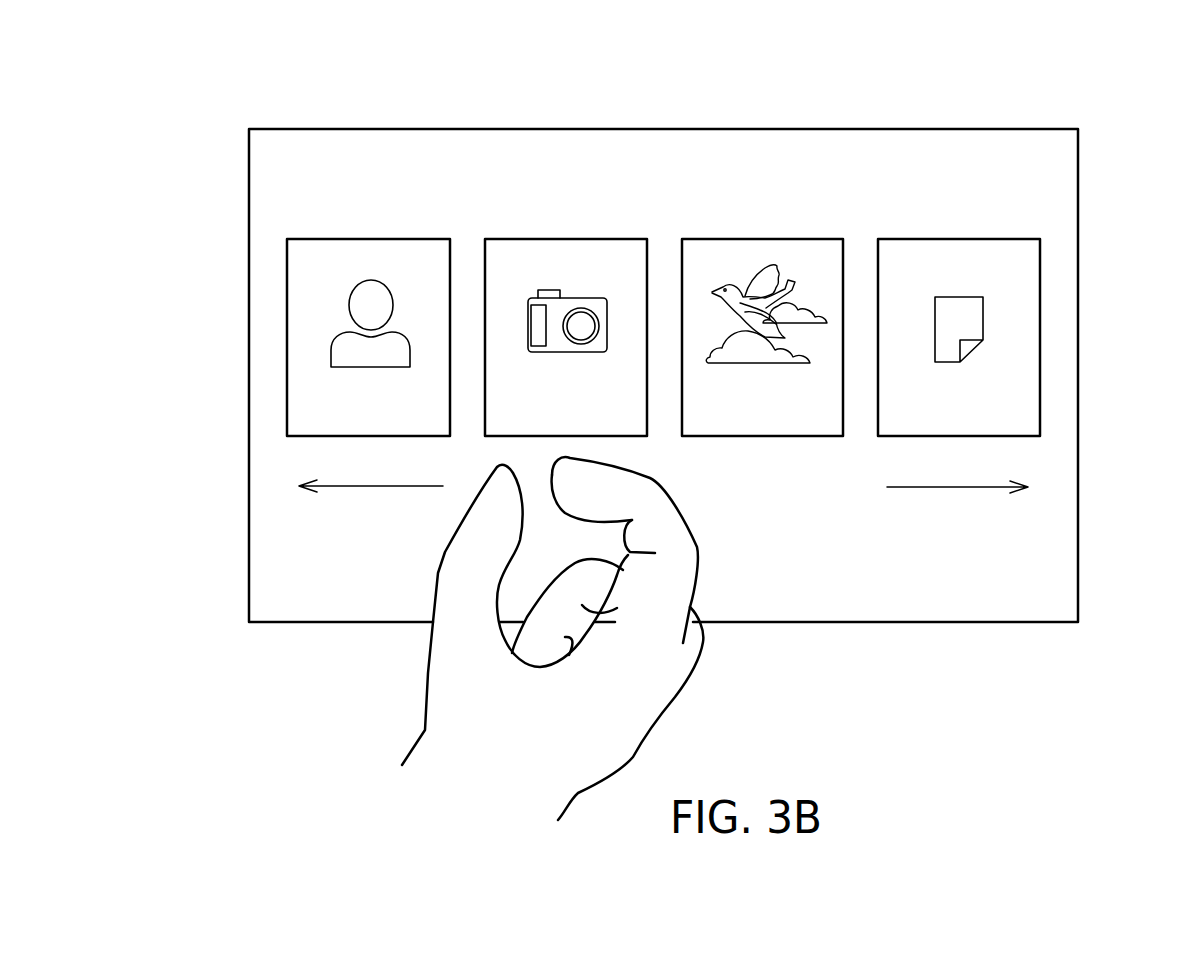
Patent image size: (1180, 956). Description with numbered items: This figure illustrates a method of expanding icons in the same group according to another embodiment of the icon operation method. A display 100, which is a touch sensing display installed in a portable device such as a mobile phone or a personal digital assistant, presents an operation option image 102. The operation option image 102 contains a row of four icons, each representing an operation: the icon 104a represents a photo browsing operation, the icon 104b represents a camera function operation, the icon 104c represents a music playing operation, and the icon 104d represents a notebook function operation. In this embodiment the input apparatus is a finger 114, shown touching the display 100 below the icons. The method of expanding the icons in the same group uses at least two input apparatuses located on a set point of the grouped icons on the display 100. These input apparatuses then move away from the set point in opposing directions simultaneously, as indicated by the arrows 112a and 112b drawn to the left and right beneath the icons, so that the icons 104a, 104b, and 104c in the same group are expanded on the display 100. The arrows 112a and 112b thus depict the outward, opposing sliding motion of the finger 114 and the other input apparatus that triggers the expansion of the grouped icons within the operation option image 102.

The display 100 is at (1078, 237).
The operation option image 102 is at (866, 578).
The icon 104a is at (370, 237).
The icon 104b is at (568, 237).
The icon 104c is at (763, 237).
The icon 104d is at (960, 237).
The arrow 112a is at (353, 487).
The arrow 112b is at (973, 487).
The finger 114 is at (560, 742).